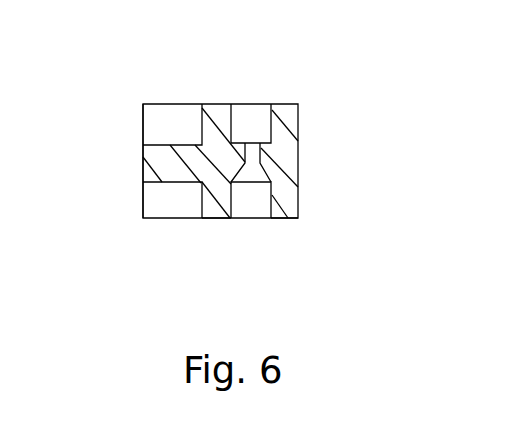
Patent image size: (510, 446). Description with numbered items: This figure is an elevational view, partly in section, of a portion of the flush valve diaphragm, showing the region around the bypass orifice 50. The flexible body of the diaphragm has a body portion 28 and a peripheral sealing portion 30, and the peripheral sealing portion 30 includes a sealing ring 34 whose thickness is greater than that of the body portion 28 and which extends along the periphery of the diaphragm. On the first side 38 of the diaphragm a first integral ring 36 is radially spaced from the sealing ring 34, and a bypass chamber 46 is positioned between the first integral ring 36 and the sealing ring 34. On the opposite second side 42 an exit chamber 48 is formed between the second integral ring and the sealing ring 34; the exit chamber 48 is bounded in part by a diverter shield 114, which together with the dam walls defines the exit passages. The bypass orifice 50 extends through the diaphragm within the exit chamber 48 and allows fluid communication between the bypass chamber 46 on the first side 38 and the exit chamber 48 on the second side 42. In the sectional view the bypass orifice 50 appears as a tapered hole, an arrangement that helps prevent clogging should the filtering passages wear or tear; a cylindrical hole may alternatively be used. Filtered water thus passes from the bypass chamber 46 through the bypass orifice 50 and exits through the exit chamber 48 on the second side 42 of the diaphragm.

The peripheral sealing portion 30 is at (298, 163).
The second side 42 is at (178, 145).
The first side 38 is at (175, 182).
The exit chamber 48 is at (255, 112).
The bypass orifice 50 is at (246, 173).
The bypass chamber 46 is at (260, 207).
The diverter shield 114 is at (220, 104).
The body portion 28 is at (143, 144).
The first integral ring 36 is at (210, 218).
The sealing ring 34 is at (298, 218).